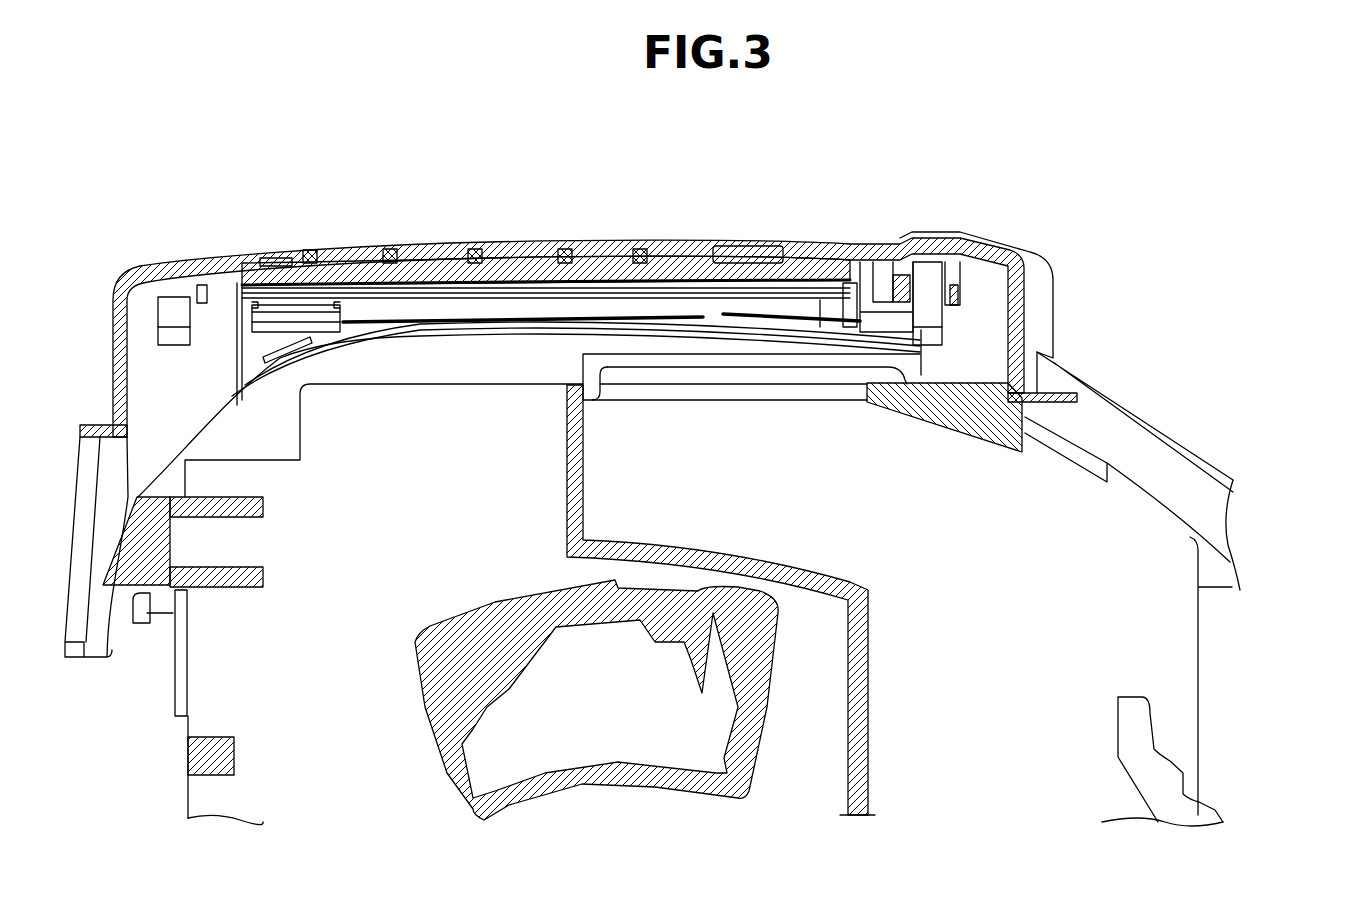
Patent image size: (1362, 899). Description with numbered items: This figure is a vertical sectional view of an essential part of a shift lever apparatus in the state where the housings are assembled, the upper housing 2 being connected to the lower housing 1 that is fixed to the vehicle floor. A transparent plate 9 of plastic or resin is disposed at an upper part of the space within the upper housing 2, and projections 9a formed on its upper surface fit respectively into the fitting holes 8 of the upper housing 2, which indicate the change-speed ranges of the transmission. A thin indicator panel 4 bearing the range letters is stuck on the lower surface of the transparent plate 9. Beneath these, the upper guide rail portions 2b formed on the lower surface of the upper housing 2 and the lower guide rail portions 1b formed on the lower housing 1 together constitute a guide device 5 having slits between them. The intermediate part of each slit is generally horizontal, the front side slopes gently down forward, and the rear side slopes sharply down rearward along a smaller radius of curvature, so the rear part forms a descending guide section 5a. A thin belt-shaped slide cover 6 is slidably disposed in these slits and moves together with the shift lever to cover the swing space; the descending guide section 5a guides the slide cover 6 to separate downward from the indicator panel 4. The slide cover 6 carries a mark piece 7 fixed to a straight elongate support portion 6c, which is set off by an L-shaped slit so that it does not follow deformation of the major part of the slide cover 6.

The lower housing 1 is at (1240, 684).
The lower guide rail portions 1b is at (822, 332).
The upper housing 2 is at (1076, 327).
The upper guide rail portions 2b is at (751, 310).
The indicator panel 4 is at (418, 290).
The guide device 5 is at (791, 303).
The descending guide section 5a is at (157, 665).
The slide cover 6 is at (667, 312).
The support portion 6c is at (373, 318).
The mark piece 7 is at (333, 302).
The fitting holes 8 is at (300, 263).
The transparent plate 9 is at (460, 287).
The projections 9a is at (507, 257).